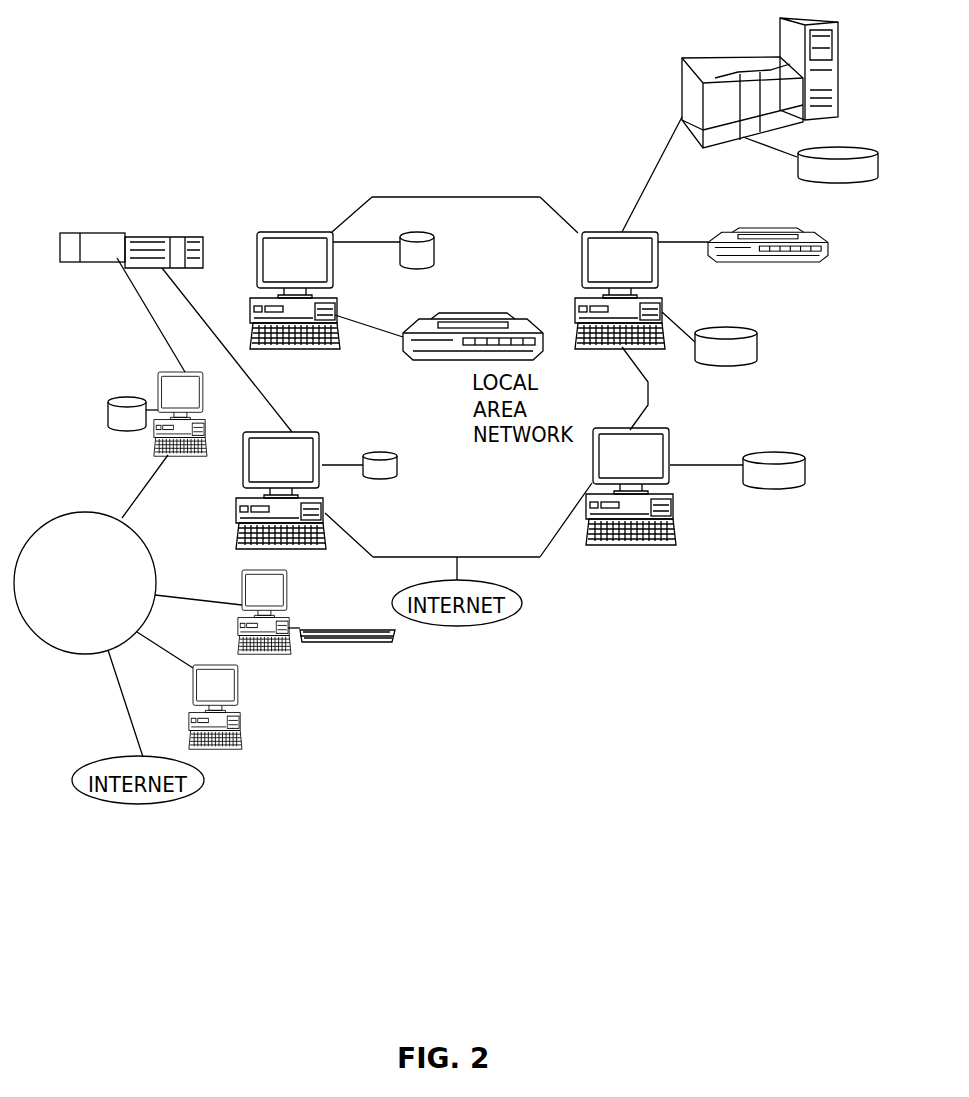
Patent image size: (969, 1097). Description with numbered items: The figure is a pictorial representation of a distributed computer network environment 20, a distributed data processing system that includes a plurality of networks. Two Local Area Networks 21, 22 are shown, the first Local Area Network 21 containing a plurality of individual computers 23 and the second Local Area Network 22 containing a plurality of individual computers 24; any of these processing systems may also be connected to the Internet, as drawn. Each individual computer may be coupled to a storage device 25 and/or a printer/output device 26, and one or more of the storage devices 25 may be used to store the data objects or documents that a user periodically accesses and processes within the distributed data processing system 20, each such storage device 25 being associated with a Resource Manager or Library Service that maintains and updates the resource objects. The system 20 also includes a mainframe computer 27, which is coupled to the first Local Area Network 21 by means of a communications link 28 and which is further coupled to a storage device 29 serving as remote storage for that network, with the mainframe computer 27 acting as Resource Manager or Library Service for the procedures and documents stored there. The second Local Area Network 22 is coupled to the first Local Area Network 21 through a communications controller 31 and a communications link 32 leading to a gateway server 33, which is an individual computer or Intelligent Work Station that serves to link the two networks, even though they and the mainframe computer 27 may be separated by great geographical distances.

The distributed computer network environment 20 is at (470, 178).
The Local Area Network 21 is at (540, 557).
The Local Area Network 22 is at (85, 514).
The individual computer 23 is at (280, 232).
The individual computer 24 is at (285, 578).
The storage device 25 is at (434, 233).
The printer/output device 26 is at (478, 313).
The mainframe computer 27 is at (725, 58).
The communications link 28 is at (192, 300).
The storage device 29 is at (830, 147).
The communications controller 31 is at (200, 238).
The communications link 32 is at (140, 305).
The gateway server 33 is at (203, 397).